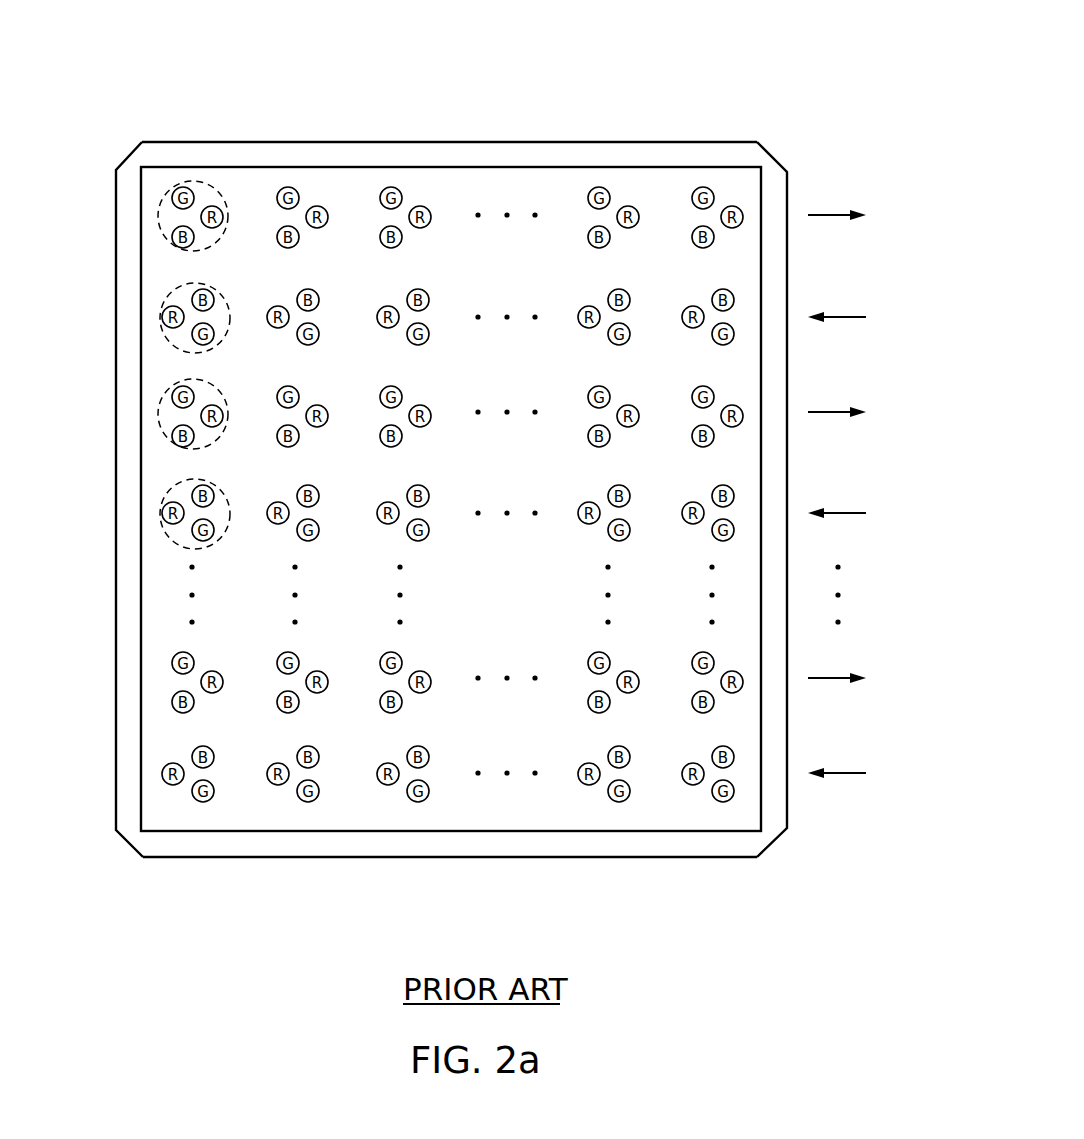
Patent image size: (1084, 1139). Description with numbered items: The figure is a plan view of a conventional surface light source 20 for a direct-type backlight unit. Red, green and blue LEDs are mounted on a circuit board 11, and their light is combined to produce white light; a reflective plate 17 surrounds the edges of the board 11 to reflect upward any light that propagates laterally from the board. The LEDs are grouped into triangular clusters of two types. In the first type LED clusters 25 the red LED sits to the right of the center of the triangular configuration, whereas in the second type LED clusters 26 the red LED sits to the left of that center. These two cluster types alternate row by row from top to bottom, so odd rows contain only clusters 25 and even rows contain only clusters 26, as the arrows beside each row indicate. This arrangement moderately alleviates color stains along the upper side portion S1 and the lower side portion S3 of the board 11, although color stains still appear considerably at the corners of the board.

The surface light source 20 is at (455, 51).
The circuit board 11 is at (452, 193).
The reflective plate 17 is at (625, 157).
The upper side portion S1 is at (521, 166).
The lower side portion S3 is at (460, 832).
The first type LED cluster 25 is at (160, 210).
The second type LED cluster 26 is at (160, 312).